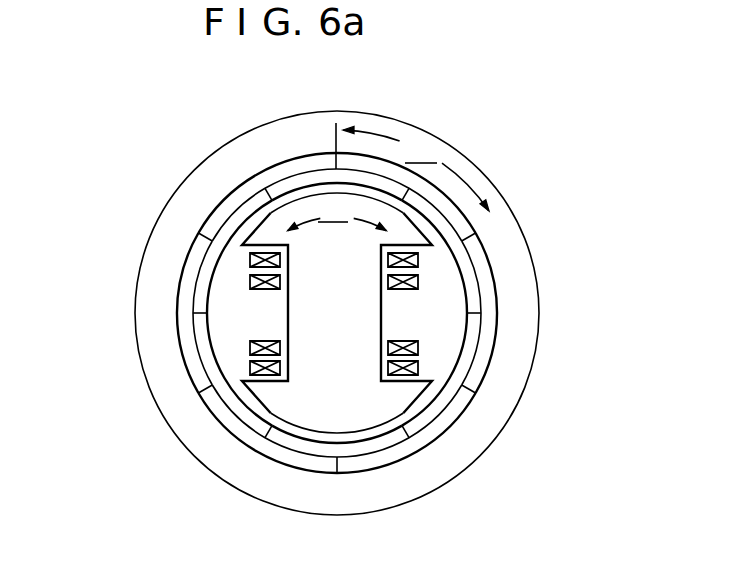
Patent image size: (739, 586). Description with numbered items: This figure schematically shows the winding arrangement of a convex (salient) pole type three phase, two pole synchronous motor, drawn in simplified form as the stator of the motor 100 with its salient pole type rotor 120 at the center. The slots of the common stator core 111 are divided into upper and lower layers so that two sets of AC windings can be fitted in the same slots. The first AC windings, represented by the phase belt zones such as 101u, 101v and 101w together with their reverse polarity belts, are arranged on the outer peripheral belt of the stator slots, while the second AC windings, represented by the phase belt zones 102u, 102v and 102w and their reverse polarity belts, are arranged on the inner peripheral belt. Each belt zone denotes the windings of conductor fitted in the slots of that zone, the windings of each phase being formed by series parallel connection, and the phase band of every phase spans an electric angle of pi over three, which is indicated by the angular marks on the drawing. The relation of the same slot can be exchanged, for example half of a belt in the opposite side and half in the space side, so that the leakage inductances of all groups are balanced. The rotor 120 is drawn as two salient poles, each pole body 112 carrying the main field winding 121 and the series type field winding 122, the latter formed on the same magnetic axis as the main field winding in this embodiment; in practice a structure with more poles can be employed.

The stator assembly 100 is at (608, 212).
The common stator core 111 is at (518, 313).
The first AC winding phase belt u 101u is at (440, 202).
The first AC winding phase belt w 101w is at (187, 292).
The first AC winding phase belt v 101v is at (397, 465).
The second AC winding phase belt u 102u is at (463, 258).
The second AC winding phase belt w 102w is at (240, 225).
The second AC winding phase belt v 102v is at (287, 447).
The pole piece 112 is at (347, 330).
The rotor 120 is at (362, 380).
The main field winding 121 is at (248, 265).
The series type field winding 122 is at (264, 290).